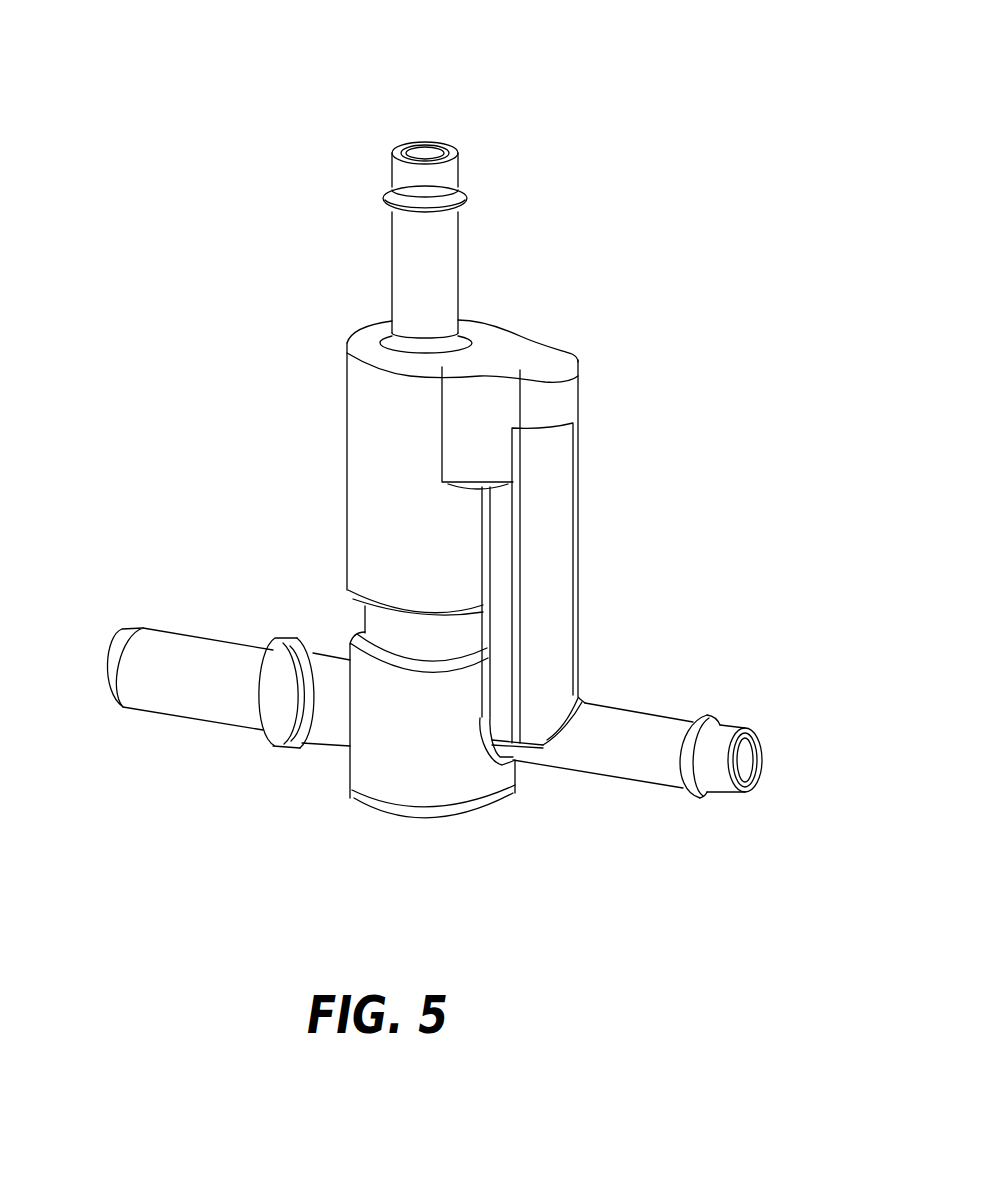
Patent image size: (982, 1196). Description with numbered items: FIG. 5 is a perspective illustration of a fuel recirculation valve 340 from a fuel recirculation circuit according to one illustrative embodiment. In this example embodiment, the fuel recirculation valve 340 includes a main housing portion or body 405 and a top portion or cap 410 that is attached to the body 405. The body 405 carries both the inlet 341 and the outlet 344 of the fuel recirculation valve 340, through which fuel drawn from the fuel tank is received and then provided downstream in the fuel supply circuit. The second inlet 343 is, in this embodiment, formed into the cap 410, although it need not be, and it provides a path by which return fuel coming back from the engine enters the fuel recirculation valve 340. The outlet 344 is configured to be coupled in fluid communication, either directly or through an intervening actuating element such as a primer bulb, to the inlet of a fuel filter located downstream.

The fuel recirculation valve 340 is at (630, 238).
The inlet 341 is at (762, 755).
The second inlet 343 is at (421, 143).
The outlet 344 is at (107, 655).
The body 405 is at (467, 552).
The cap 410 is at (483, 340).